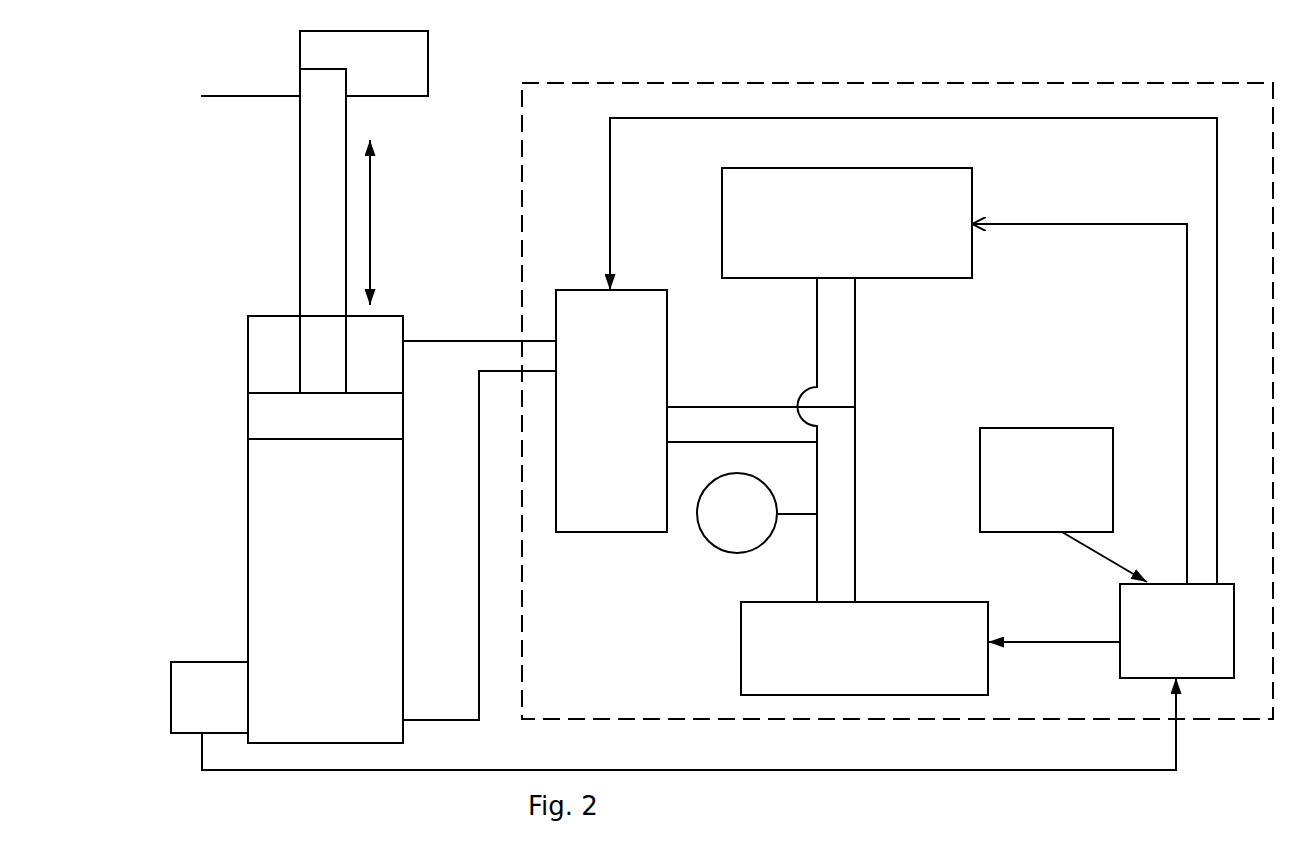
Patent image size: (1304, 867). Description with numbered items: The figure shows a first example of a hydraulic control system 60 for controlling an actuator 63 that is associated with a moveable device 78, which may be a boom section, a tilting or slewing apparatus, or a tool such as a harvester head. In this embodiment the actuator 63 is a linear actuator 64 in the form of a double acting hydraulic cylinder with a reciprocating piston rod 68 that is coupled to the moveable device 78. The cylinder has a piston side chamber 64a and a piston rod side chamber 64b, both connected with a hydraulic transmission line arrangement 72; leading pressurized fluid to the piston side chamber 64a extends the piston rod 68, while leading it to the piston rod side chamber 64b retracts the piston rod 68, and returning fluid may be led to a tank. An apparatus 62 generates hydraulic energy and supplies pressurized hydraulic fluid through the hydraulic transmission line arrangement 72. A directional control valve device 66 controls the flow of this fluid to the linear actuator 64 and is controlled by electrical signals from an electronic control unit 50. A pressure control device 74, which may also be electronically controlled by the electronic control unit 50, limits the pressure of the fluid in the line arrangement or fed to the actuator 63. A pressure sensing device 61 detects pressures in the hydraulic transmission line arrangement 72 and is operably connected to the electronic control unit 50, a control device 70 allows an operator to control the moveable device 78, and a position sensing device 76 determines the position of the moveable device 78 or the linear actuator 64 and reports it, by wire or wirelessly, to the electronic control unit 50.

The electronic control unit 50 is at (1142, 663).
The hydraulic control system 60 is at (626, 87).
The pressure sensing device 61 is at (718, 532).
The apparatus for generating hydraulic energy 62 is at (785, 649).
The actuator 63 is at (255, 515).
The linear actuator 64 is at (263, 515).
The piston side chamber 64a is at (278, 662).
The piston rod side chamber 64b is at (272, 358).
The directional control valve device 66 is at (577, 313).
The piston rod 68 is at (318, 147).
The control device 70 is at (1000, 470).
The hydraulic transmission line arrangement 72 is at (878, 370).
The pressure control device 74 is at (755, 220).
The position sensing device 76 is at (202, 708).
The moveable device 78 is at (247, 86).